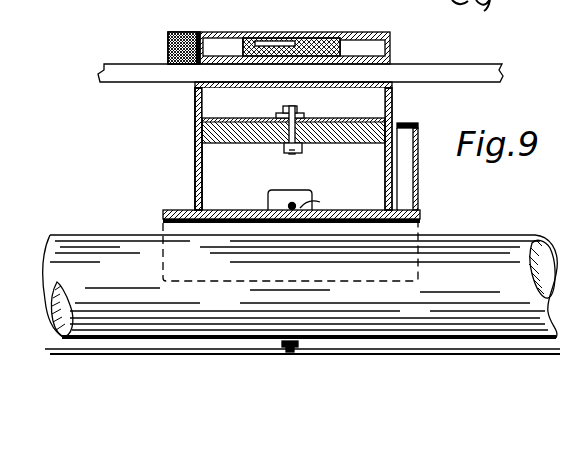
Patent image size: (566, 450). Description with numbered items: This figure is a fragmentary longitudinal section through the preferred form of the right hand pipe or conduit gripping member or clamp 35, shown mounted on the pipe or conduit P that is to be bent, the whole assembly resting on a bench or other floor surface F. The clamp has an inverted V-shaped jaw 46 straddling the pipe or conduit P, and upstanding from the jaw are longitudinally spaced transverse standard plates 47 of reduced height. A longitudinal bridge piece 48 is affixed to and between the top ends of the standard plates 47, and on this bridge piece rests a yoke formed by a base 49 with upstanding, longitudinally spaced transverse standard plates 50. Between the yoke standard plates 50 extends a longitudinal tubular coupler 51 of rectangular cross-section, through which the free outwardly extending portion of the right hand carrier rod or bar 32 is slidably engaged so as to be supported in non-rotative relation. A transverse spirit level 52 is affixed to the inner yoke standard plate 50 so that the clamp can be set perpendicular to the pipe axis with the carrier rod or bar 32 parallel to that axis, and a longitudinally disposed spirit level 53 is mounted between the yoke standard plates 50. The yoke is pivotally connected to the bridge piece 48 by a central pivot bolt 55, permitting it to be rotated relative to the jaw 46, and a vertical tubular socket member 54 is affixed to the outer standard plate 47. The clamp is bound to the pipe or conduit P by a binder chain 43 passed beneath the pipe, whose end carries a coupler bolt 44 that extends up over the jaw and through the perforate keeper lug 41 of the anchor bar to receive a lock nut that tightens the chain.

The right hand carrier rod or bar 32 is at (132, 65).
The right hand pipe or conduit gripping member or clamp 35 is at (187, 171).
The perforate keeper lug 41 is at (282, 190).
The binder chain 43 is at (291, 348).
The coupler bolt 44 is at (311, 199).
The inverted V-shaped jaw 46 is at (420, 226).
The transverse standard plates 47 is at (202, 180).
The longitudinal bridge piece 48 is at (304, 144).
The yoke base 49 is at (392, 106).
The transverse standard plates of the yoke 50 is at (193, 95).
The longitudinal tubular coupler 51 is at (245, 94).
The transverse spirit level 52 is at (186, 20).
The longitudinally disposed spirit level 53 is at (283, 41).
The vertical tubular socket member 54 is at (406, 170).
The central pivot bolt 55 is at (298, 118).
The pipe or conduit P is at (126, 248).
The bench or other floor surface F is at (405, 346).